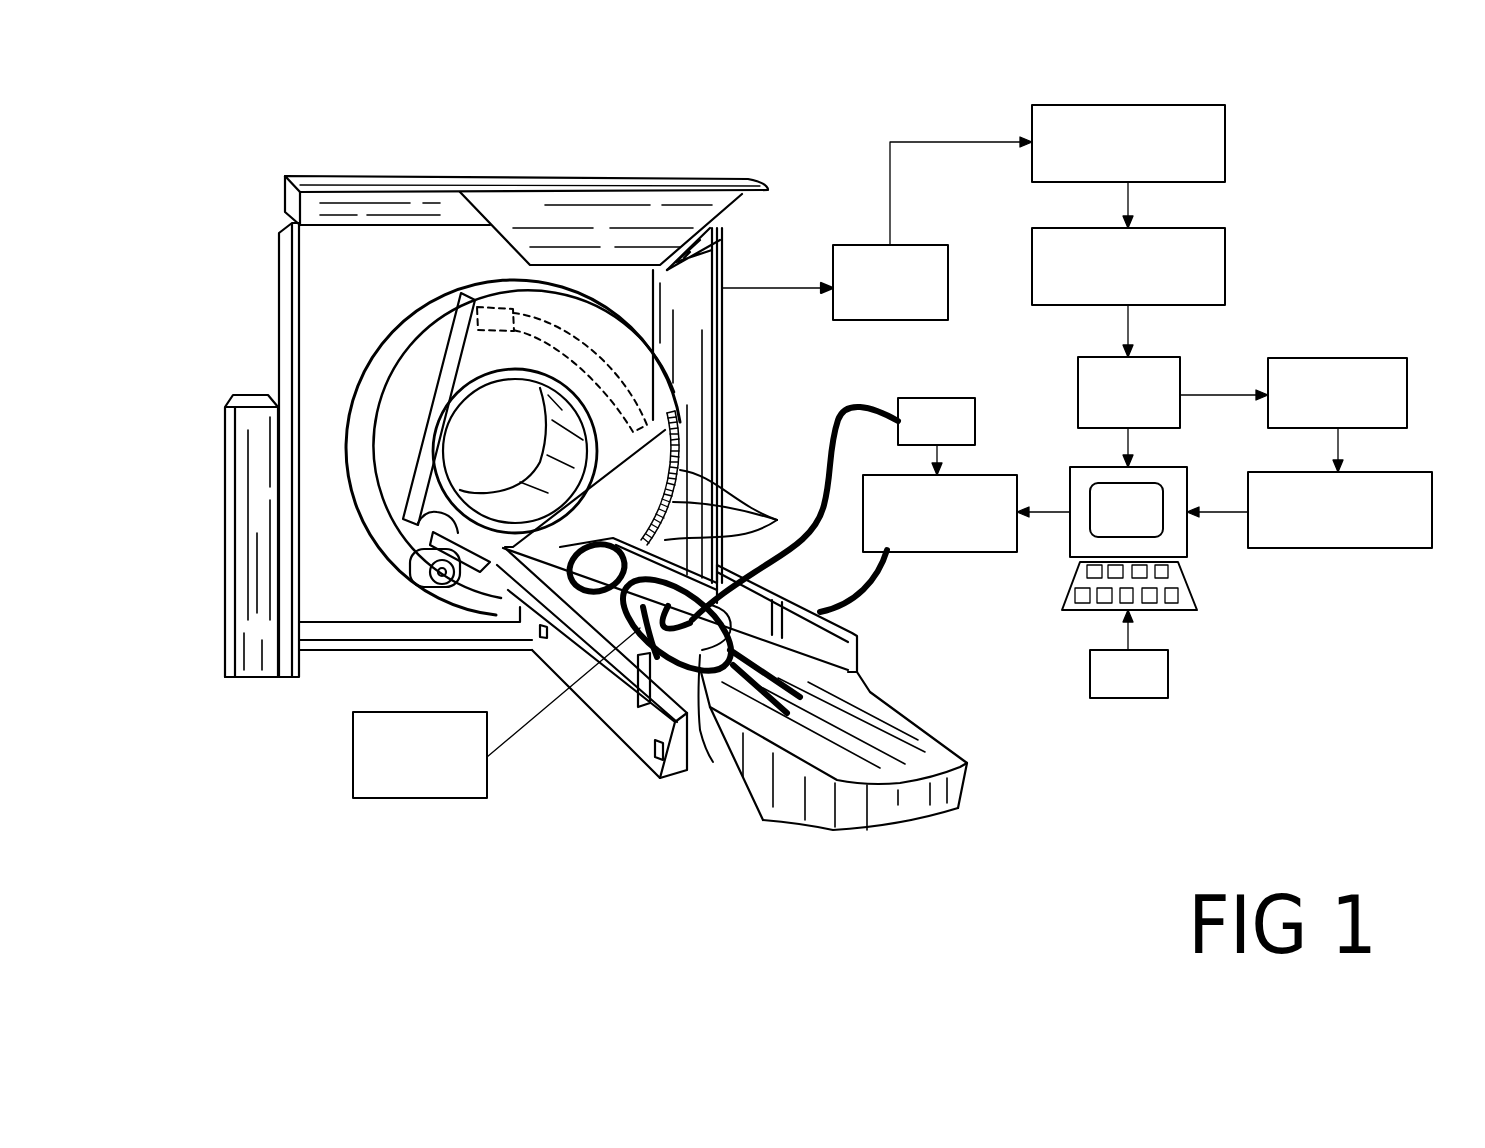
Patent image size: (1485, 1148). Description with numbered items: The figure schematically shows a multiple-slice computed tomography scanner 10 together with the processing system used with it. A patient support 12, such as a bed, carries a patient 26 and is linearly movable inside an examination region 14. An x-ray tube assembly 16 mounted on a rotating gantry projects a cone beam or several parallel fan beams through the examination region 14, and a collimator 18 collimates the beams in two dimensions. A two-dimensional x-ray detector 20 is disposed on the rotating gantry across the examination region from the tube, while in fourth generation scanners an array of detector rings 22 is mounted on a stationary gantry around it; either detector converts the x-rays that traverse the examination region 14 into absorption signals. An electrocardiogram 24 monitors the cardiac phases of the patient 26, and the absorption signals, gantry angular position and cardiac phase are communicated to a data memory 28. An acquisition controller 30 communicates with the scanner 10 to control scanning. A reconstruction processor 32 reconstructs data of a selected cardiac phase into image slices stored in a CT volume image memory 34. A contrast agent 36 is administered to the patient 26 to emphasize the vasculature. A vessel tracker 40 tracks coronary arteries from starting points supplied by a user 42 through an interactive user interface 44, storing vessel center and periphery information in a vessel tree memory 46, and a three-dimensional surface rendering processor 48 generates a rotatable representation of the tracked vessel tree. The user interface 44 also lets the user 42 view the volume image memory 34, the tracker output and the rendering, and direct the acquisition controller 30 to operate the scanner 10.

The computed tomography scanner 10 is at (748, 158).
The patient support 12 is at (903, 740).
The examination region 14 is at (481, 425).
The x-ray tube assembly 16 is at (423, 583).
The collimator 18 is at (403, 537).
The two-dimensional x-ray detector 20 is at (516, 326).
The array of two-dimensional detector rings 22 is at (736, 505).
The electrocardiogram 24 is at (915, 397).
The patient 26 is at (710, 762).
The data memory 28 is at (948, 275).
The acquisition controller 30 is at (980, 553).
The reconstruction processor 32 is at (1225, 150).
The CT volume image memory 34 is at (1225, 278).
The contrast agent 36 is at (437, 798).
The vessel tracker 40 is at (1183, 372).
The user 42 is at (1168, 680).
The user interface 44 is at (1190, 540).
The vessel tree memory 46 is at (1303, 357).
The three-dimensional surface rendering processor 48 is at (1300, 548).